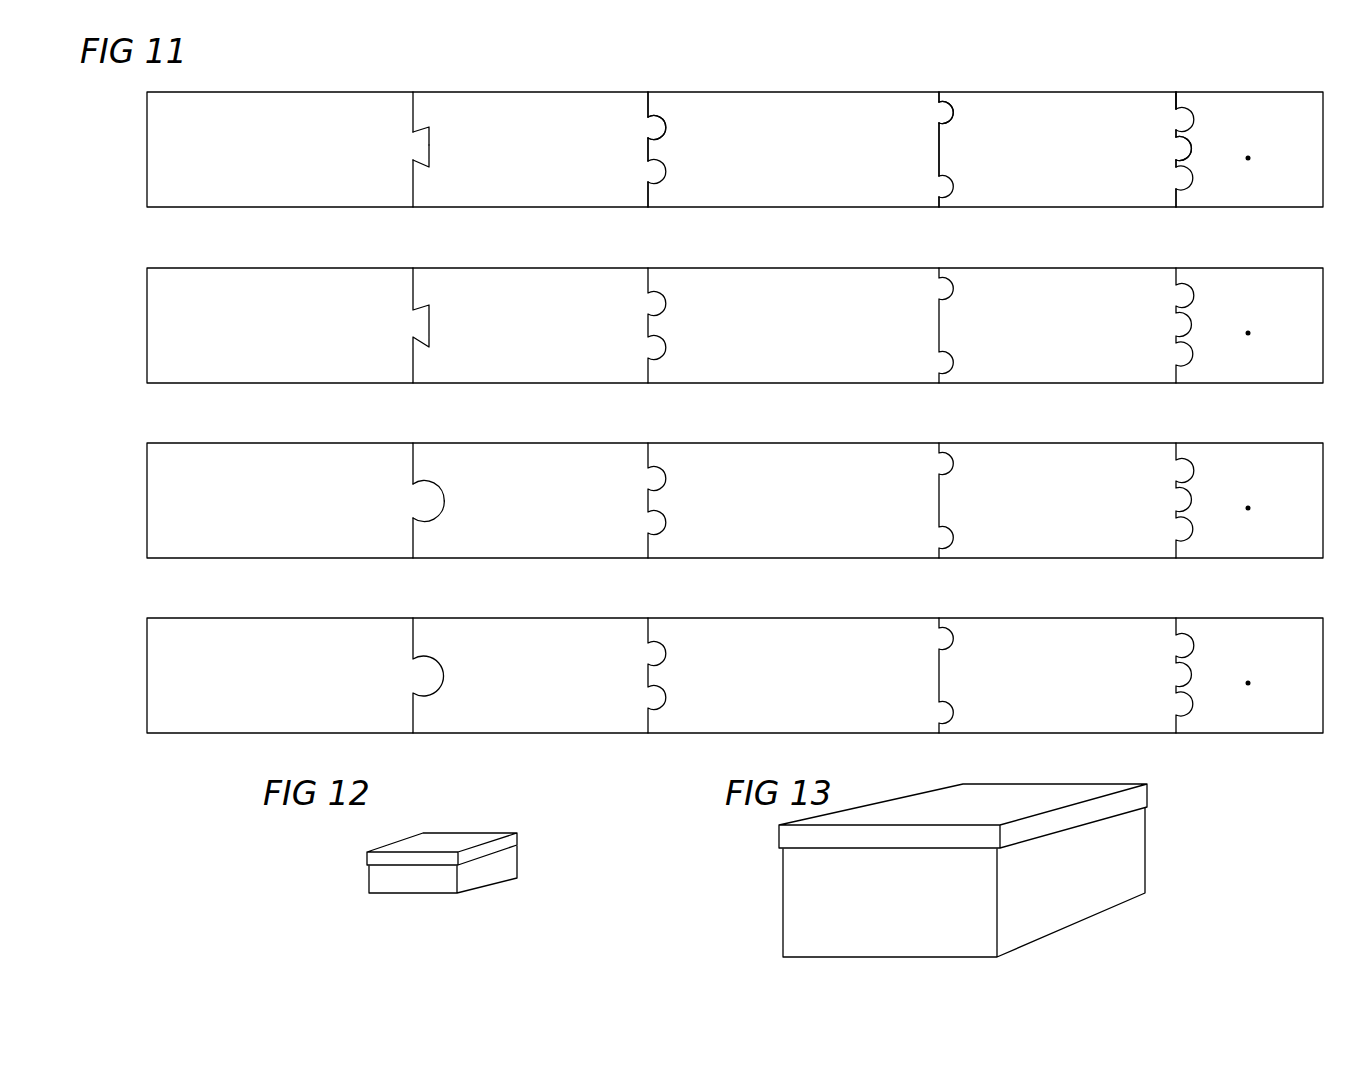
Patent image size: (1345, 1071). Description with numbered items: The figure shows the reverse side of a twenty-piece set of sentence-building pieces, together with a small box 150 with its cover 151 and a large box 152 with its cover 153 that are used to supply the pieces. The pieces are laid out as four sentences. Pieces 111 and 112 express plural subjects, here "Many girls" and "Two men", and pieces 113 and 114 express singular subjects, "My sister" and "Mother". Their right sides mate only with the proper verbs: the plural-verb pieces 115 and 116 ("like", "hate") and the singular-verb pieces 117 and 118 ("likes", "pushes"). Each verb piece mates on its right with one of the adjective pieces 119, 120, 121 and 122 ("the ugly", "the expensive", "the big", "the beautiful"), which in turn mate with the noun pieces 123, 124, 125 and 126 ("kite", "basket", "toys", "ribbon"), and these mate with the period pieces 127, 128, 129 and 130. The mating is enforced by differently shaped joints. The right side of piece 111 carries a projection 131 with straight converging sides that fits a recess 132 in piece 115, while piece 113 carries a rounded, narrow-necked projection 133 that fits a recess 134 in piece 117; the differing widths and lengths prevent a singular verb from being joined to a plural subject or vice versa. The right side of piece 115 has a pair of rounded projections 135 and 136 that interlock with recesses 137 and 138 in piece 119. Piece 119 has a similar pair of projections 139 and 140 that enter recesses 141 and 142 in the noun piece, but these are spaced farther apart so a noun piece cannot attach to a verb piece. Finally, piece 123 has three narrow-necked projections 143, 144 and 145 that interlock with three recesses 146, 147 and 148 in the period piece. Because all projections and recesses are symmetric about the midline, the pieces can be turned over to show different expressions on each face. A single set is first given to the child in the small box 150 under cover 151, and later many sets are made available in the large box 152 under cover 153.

In FIG. 11, the piece 111 is at (237, 98).
In FIG. 11, the piece 112 is at (235, 275).
In FIG. 11, the piece 113 is at (232, 449).
In FIG. 11, the piece 114 is at (232, 624).
In FIG. 11, the piece 115 is at (487, 98).
In FIG. 11, the piece 116 is at (474, 275).
In FIG. 11, the piece 117 is at (477, 449).
In FIG. 11, the piece 118 is at (482, 624).
In FIG. 11, the piece 119 is at (732, 98).
In FIG. 11, the piece 120 is at (722, 275).
In FIG. 11, the piece 121 is at (717, 449).
In FIG. 11, the piece 122 is at (722, 624).
In FIG. 11, the piece 123 is at (1002, 98).
In FIG. 11, the piece 124 is at (1012, 275).
In FIG. 11, the piece 125 is at (1000, 449).
In FIG. 11, the piece 126 is at (1002, 624).
In FIG. 11, the piece 127 is at (1279, 97).
In FIG. 11, the piece 128 is at (1209, 275).
In FIG. 11, the piece 129 is at (1207, 449).
In FIG. 11, the piece 130 is at (1207, 624).
In FIG. 11, the projection 131 is at (421, 130).
In FIG. 11, the recess 132 is at (426, 158).
In FIG. 11, the projection 133 is at (418, 487).
In FIG. 11, the recess 134 is at (421, 518).
In FIG. 11, the projection 135 is at (648, 207).
In FIG. 11, the projection 136 is at (654, 118).
In FIG. 11, the recess 137 is at (659, 170).
In FIG. 11, the recess 138 is at (661, 128).
In FIG. 11, the projection 139 is at (939, 207).
In FIG. 11, the projection 140 is at (949, 111).
In FIG. 11, the recess 141 is at (951, 181).
In FIG. 11, the recess 142 is at (951, 120).
In FIG. 11, the projection 143 is at (1176, 207).
In FIG. 11, the projection 144 is at (1177, 148).
In FIG. 11, the projection 145 is at (1181, 108).
In FIG. 11, the recess 146 is at (1187, 176).
In FIG. 11, the recess 147 is at (1187, 152).
In FIG. 11, the recess 148 is at (1186, 125).
In FIG. 12, the small box 150 is at (518, 860).
In FIG. 12, the cover 151 is at (518, 842).
In FIG. 13, the large box 152 is at (790, 898).
In FIG. 13, the cover 153 is at (785, 836).